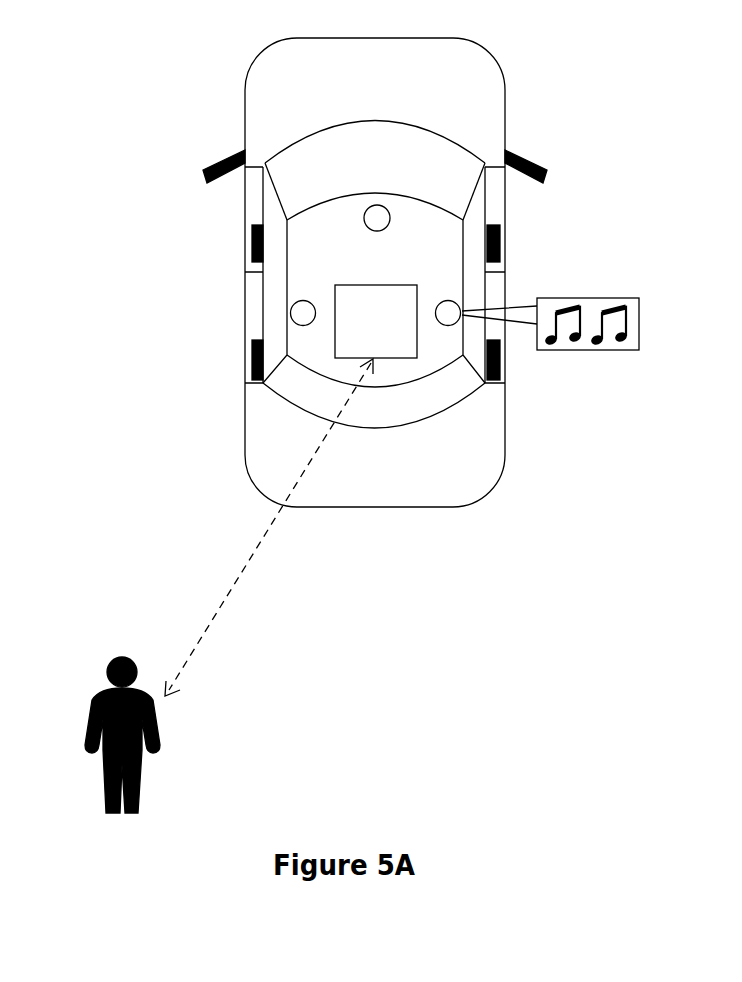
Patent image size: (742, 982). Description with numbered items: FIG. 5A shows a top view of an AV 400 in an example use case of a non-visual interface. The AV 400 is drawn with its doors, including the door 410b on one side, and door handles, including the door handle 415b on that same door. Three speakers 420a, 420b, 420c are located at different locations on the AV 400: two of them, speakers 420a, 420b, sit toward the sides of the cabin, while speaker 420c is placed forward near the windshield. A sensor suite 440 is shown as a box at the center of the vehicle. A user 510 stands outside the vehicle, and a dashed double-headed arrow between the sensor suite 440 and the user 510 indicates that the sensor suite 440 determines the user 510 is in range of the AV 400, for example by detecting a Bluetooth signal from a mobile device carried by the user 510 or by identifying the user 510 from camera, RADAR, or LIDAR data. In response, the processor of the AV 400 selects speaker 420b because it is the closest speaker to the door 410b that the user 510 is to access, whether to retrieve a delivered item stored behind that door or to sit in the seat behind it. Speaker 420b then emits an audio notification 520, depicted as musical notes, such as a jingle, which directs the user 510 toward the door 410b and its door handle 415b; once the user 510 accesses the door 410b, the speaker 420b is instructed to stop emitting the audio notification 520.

The AV 400 is at (238, 92).
The door 410b is at (495, 283).
The door handle 415b is at (505, 380).
The speaker 420a is at (303, 298).
The speaker 420b is at (447, 297).
The speaker 420c is at (370, 205).
The sensor suite 440 is at (376, 321).
The user 510 is at (122, 753).
The audio notification 520 is at (550, 337).